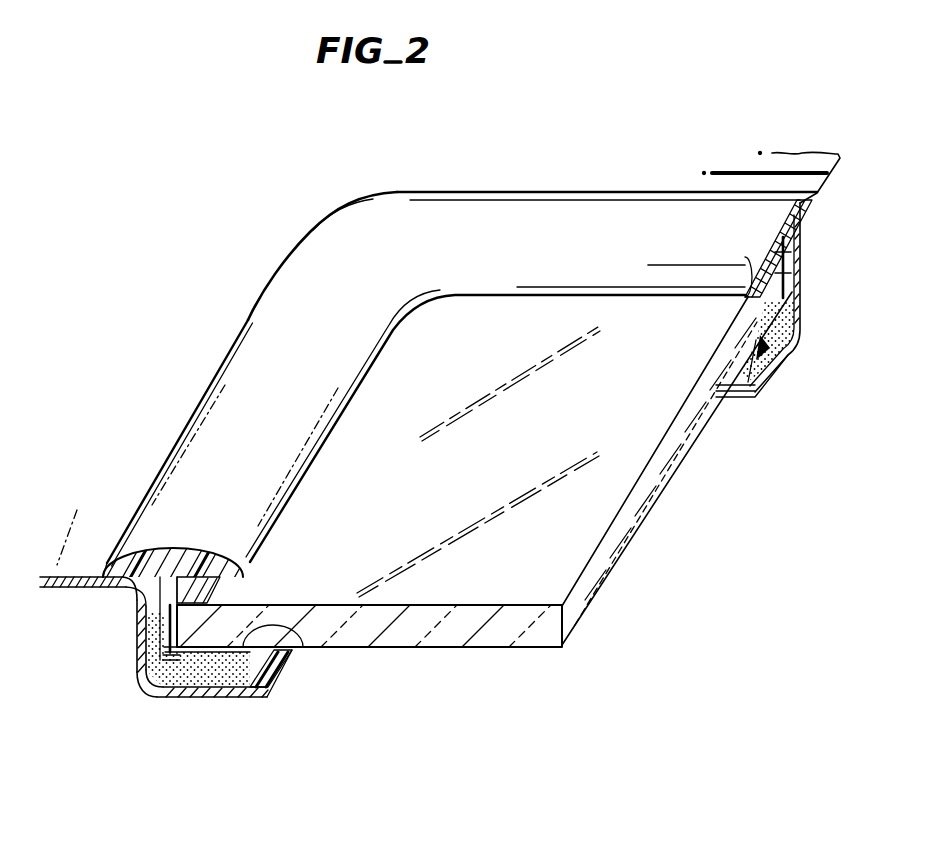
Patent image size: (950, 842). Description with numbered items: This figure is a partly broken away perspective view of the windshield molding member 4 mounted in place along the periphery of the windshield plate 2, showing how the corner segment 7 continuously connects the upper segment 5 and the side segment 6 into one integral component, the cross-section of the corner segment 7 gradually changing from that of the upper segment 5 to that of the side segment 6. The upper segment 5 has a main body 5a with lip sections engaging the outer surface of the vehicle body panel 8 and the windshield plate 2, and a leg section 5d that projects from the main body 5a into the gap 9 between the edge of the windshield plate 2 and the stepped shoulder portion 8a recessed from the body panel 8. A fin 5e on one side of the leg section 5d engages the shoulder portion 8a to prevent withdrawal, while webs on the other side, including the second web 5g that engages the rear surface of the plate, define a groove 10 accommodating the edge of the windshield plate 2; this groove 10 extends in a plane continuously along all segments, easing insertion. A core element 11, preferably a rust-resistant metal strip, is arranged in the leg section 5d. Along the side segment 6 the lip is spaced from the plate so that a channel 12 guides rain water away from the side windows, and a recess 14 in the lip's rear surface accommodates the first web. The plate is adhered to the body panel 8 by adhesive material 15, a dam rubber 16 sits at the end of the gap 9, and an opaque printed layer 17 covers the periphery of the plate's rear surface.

The windshield plate 2 is at (552, 582).
The windshield molding member 4 is at (257, 306).
The upper segment 5 is at (612, 197).
The main body 5a is at (170, 557).
The leg section 5d is at (147, 690).
The fin 5e is at (143, 622).
The second web 5g is at (178, 697).
The side segment 6 is at (216, 378).
The corner segment 7 is at (356, 196).
The vehicle body panel 8 is at (80, 553).
The stepped shoulder portion 8a is at (152, 640).
The gap 9 is at (140, 583).
The groove 10 is at (168, 628).
The core element 11 is at (170, 648).
The channel 12 is at (228, 592).
The recess 14 is at (210, 552).
The adhesive material 15 is at (204, 674).
The dam rubber 16 is at (276, 690).
The opaque printed layer 17 is at (303, 646).